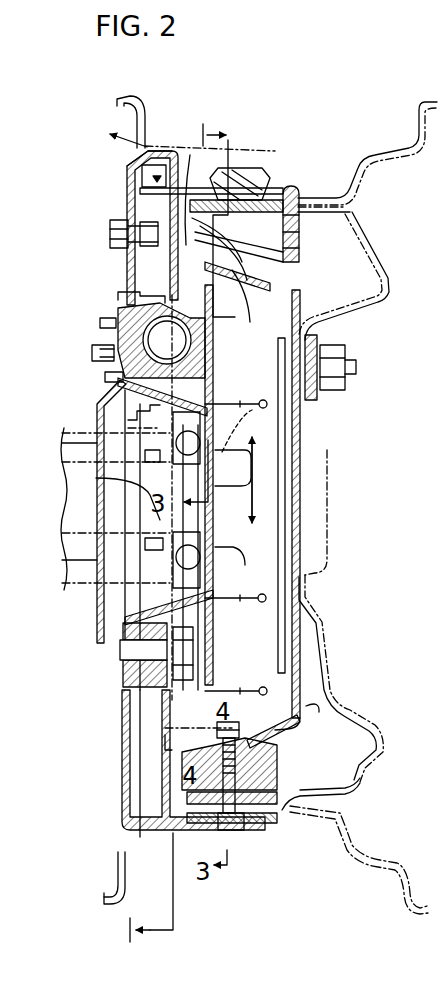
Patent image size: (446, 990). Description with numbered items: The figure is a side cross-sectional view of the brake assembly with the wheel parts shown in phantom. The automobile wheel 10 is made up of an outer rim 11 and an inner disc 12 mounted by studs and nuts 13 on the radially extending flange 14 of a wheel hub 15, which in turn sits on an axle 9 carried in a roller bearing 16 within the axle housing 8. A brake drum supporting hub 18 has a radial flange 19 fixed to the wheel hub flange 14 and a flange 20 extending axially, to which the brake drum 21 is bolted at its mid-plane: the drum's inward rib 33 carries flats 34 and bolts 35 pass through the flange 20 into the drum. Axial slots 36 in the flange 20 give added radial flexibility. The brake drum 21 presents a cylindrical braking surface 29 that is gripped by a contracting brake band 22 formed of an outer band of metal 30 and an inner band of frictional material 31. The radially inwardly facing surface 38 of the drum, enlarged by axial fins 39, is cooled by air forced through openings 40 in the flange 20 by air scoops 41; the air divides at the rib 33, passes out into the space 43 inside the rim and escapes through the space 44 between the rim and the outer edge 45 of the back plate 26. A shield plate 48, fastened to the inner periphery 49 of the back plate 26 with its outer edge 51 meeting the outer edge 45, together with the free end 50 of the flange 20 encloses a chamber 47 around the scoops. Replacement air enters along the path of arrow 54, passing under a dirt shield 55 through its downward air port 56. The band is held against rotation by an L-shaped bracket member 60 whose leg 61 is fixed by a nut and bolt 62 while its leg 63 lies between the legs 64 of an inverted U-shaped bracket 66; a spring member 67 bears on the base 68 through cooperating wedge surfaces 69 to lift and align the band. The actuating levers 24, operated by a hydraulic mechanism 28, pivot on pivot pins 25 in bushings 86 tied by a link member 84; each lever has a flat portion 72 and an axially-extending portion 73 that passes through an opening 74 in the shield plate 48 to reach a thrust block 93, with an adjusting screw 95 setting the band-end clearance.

The axle housing 8 is at (156, 420).
The axle 9 is at (80, 518).
The automobile wheel 10 is at (362, 183).
The outer rim 11 is at (395, 150).
The inner disc 12 is at (376, 241).
The studs and nuts 13 is at (346, 363).
The radially extending flange 14 is at (290, 400).
The wheel hub 15 is at (242, 456).
The roller bearing 16 is at (160, 557).
The brake drum supporting hub 18 is at (306, 291).
The radial flange 19 is at (304, 305).
The flange 20 is at (298, 281).
The brake drum 21 is at (293, 226).
The brake band 22 is at (292, 192).
The actuating levers 24 is at (122, 297).
The pivot pins 25 is at (131, 651).
The back plate 26 is at (160, 741).
The hydraulic mechanism 28 is at (128, 335).
The braking surface 29 is at (338, 208).
The outer band of metal 30 is at (272, 184).
The inner band of frictional material 31 is at (268, 233).
The rib 33 is at (251, 290).
The flats 34 is at (252, 742).
The bolts 35 is at (243, 736).
The axial slots 36 is at (234, 402).
The radially inwardly facing surface 38 is at (171, 276).
The fins 39 is at (287, 240).
The openings 40 is at (253, 281).
The air scoop 41 is at (246, 317).
The space 43 is at (185, 162).
The space 44 is at (141, 108).
The outer edge 45 is at (148, 154).
The chamber 47 is at (257, 364).
The shield plate 48 is at (214, 339).
The inner periphery 49 is at (206, 588).
The free end 50 is at (153, 244).
The outer edge 51 is at (153, 160).
The arrow 54 is at (117, 494).
The dirt shield 55 is at (97, 406).
The air port 56 is at (97, 641).
The L-shaped bracket member 60 is at (233, 170).
The leg 61 is at (137, 206).
The nut and bolt 62 is at (113, 241).
The leg 63 is at (198, 180).
The legs 64 is at (258, 185).
The inverted U-shaped bracket 66 is at (238, 190).
The spring member 67 is at (230, 190).
The base 68 is at (226, 252).
The wedge surfaces 69 is at (268, 188).
The portion 72 is at (150, 799).
The axially-extending portion 73 is at (190, 838).
The opening 74 is at (133, 829).
The link member 84 is at (128, 701).
The bushing 86 is at (195, 661).
The thrust block 93 is at (264, 814).
The adjusting screw 95 is at (238, 835).